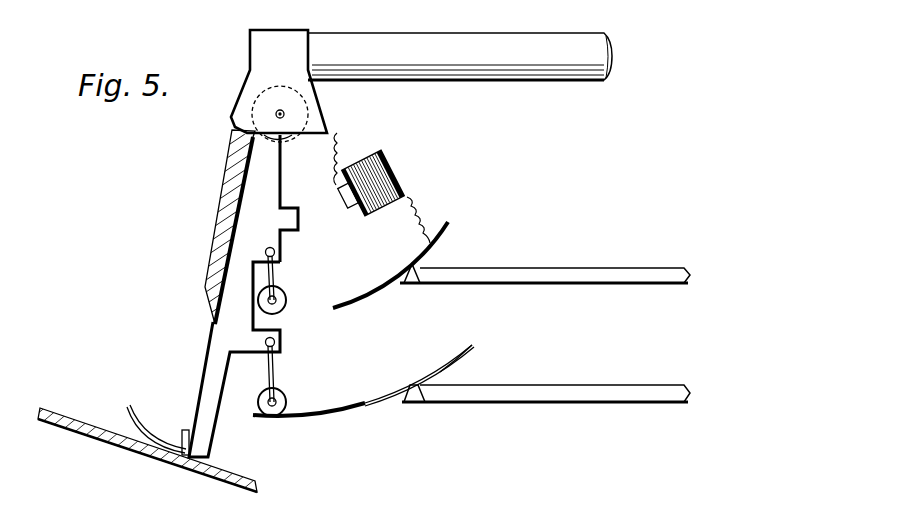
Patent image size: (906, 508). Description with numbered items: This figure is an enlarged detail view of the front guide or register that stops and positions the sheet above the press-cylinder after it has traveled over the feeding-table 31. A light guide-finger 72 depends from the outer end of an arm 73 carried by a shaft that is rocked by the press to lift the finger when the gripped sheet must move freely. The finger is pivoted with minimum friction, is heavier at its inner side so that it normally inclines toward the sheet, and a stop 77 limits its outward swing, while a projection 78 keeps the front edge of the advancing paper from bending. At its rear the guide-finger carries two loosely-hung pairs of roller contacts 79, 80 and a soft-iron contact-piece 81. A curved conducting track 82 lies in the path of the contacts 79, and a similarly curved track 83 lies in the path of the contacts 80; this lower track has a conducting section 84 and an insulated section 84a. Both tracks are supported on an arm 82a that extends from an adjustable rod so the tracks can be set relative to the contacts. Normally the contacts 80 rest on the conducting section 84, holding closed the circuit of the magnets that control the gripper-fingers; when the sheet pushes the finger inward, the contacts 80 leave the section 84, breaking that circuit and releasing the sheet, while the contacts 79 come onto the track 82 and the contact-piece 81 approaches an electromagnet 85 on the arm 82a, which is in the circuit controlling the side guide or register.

The feeding-table 31 is at (150, 449).
The guide-finger 72 is at (205, 371).
The arm 73 is at (431, 80).
The stop 77 is at (206, 284).
The projection 78 is at (138, 396).
The roller contacts 79 is at (281, 295).
The roller contacts 80 is at (294, 391).
The soft-iron contact-piece 81 is at (301, 208).
The curved track 82 is at (371, 300).
The arm 82a is at (612, 270).
The curved track 83 is at (409, 375).
The conducting section 84 is at (300, 419).
The insulated section 84a is at (448, 358).
The electromagnet 85 is at (376, 166).